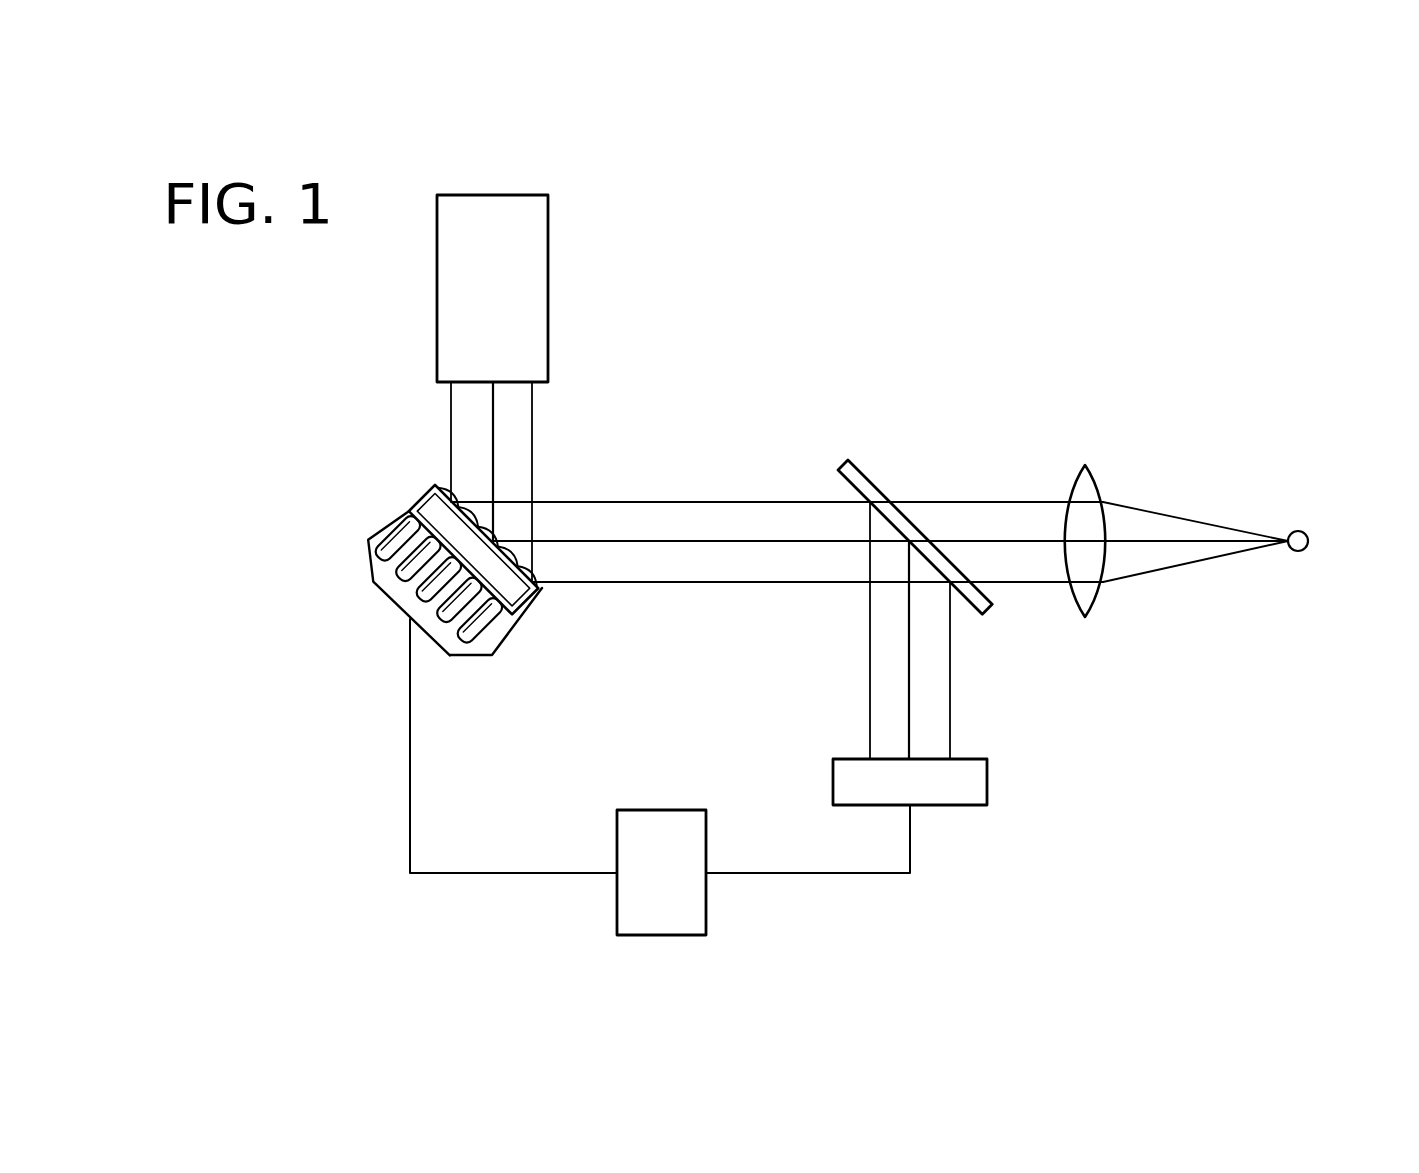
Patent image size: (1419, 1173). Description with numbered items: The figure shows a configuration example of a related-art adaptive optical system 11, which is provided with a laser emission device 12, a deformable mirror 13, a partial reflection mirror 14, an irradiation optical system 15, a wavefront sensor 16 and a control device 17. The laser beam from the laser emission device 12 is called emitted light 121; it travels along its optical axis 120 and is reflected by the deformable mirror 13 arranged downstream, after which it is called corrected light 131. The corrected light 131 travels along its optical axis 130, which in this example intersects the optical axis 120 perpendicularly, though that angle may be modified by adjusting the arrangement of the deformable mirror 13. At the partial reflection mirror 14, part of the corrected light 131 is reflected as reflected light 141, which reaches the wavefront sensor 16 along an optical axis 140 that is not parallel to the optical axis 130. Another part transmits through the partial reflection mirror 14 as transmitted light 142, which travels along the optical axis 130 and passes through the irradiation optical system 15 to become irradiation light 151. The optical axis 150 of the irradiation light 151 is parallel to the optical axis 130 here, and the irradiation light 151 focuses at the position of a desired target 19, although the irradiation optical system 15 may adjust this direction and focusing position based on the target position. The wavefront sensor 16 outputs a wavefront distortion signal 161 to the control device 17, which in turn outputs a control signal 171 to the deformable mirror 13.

The adaptive optical system 11 is at (1048, 257).
The laser emission device 12 is at (549, 281).
The deformable mirror 13 is at (385, 595).
The partial reflection mirror 14 is at (846, 458).
The irradiation optical system 15 is at (1085, 618).
The wavefront sensor 16 is at (988, 790).
The control device 17 is at (660, 788).
The target 19 is at (1298, 552).
The optical axis 120 is at (492, 402).
The emitted light 121 is at (450, 455).
The optical axis 130 is at (608, 543).
The corrected light 131 is at (656, 501).
The optical axis 140 is at (908, 675).
The reflected light 141 is at (951, 717).
The transmitted light 142 is at (977, 501).
The optical axis 150 is at (1167, 547).
The irradiation light 151 is at (1192, 540).
The wavefront distortion signal 161 is at (808, 874).
The control signal 171 is at (468, 874).